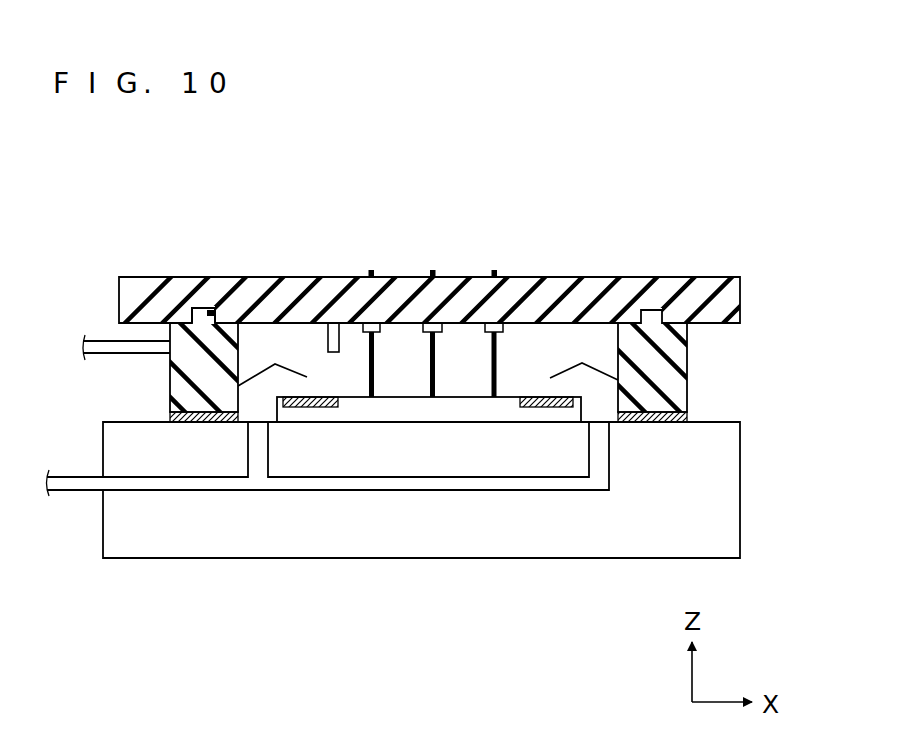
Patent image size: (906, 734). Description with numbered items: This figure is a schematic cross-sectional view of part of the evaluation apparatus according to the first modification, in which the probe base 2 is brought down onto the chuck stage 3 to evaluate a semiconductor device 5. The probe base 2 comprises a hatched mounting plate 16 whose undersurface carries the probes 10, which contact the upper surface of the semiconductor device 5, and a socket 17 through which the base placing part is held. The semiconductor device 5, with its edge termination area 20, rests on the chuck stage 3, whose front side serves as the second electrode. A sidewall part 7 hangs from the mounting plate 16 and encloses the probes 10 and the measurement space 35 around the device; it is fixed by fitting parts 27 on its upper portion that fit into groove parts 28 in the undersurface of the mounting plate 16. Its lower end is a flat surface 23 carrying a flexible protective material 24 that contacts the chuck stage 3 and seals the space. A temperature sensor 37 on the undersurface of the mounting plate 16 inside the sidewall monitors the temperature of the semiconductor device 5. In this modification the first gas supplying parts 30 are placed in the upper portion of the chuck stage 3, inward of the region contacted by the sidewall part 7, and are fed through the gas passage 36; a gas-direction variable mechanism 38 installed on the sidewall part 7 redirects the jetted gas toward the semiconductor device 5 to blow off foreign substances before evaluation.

The probe base 2 is at (757, 222).
The chuck stage 3 is at (118, 525).
The semiconductor device 5 is at (404, 396).
The sidewall part 7 is at (668, 386).
The probe 10 is at (497, 327).
The mounting plate 16 is at (727, 297).
The socket 17 is at (353, 322).
The edge termination area 20 is at (537, 395).
The flat surface 23 is at (205, 418).
The protective material 24 is at (170, 416).
The fitting part 27 is at (208, 311).
The groove part 28 is at (193, 315).
The first gas supplying part 30 is at (270, 451).
The measurement space 35 is at (566, 342).
The gas passage 36 is at (85, 481).
The temperature sensor 37 is at (333, 353).
The gas-direction variable mechanism 38 is at (282, 364).